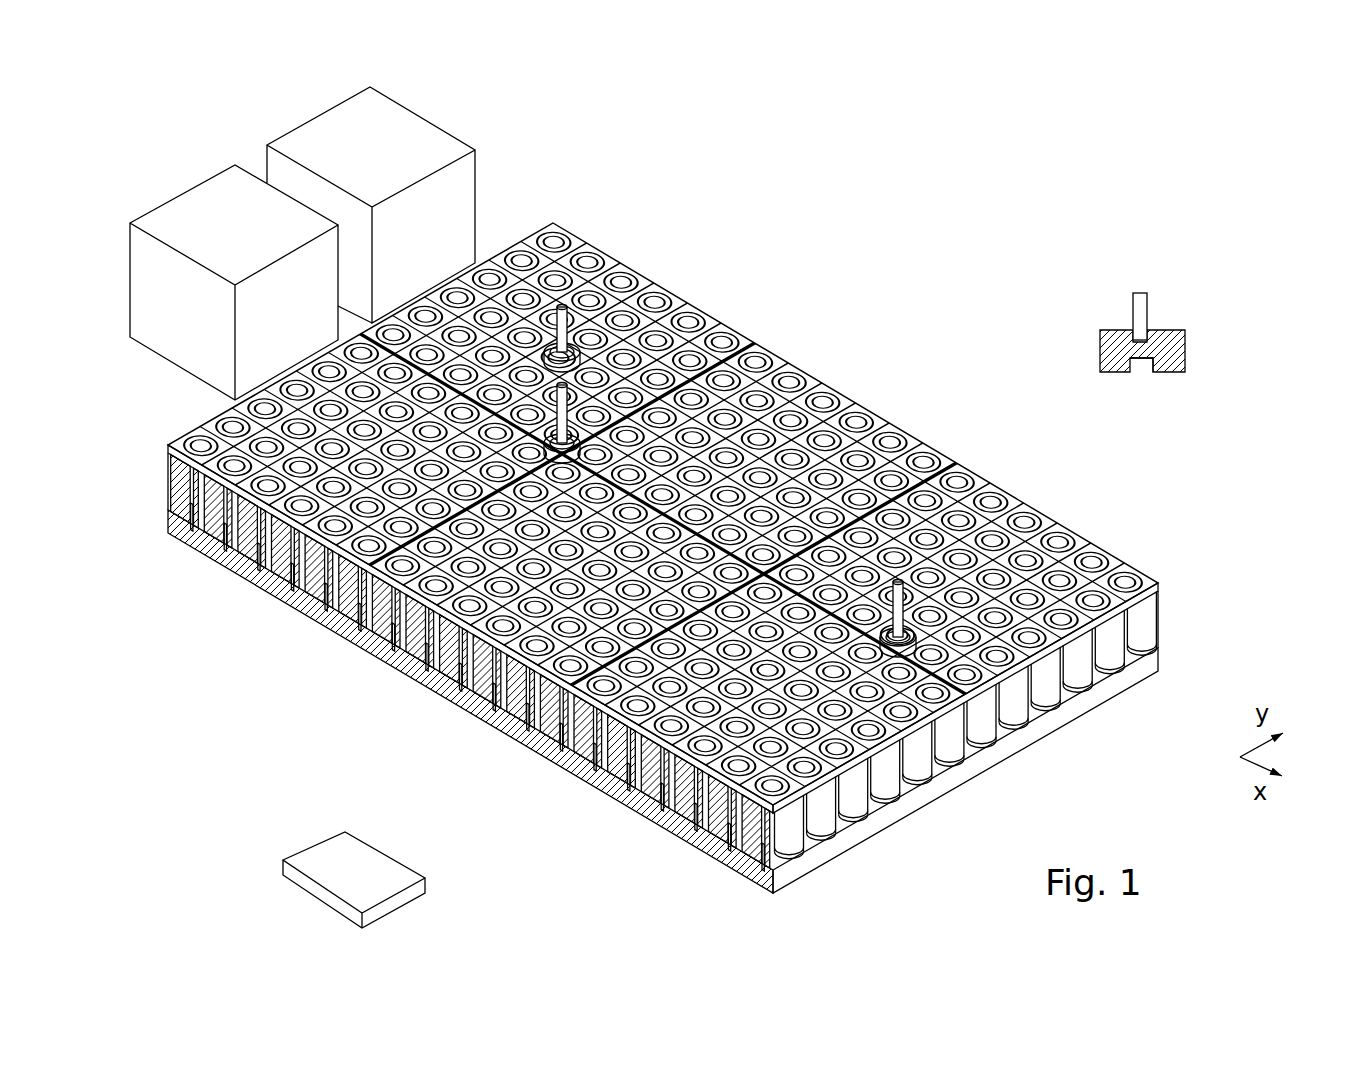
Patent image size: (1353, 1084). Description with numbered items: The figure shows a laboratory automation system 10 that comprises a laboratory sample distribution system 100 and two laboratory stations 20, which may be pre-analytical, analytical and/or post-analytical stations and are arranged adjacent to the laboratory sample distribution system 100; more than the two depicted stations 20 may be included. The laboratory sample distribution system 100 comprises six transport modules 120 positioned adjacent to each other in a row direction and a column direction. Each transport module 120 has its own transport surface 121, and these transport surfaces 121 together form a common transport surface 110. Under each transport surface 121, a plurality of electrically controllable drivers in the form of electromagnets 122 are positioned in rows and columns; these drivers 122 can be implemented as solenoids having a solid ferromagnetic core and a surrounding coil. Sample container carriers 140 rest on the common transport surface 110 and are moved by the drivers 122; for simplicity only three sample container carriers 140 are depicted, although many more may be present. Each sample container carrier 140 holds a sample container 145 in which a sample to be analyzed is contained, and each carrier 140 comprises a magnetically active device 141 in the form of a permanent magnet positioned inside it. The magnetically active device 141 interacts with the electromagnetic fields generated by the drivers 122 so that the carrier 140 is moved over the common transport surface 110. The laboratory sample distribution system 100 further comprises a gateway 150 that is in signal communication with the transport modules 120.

The laboratory automation system 10 is at (702, 589).
The laboratory station 20 is at (325, 130).
The laboratory sample distribution system 100 is at (702, 589).
The common transport surface 110 is at (653, 566).
The transport module 120 is at (718, 319).
The transport surface 121 is at (606, 331).
The electromagnet 122 is at (763, 832).
The sample container carrier 140 is at (920, 552).
The magnetically active device 141 is at (1141, 372).
The sample container 145 is at (1148, 306).
The gateway 150 is at (382, 880).